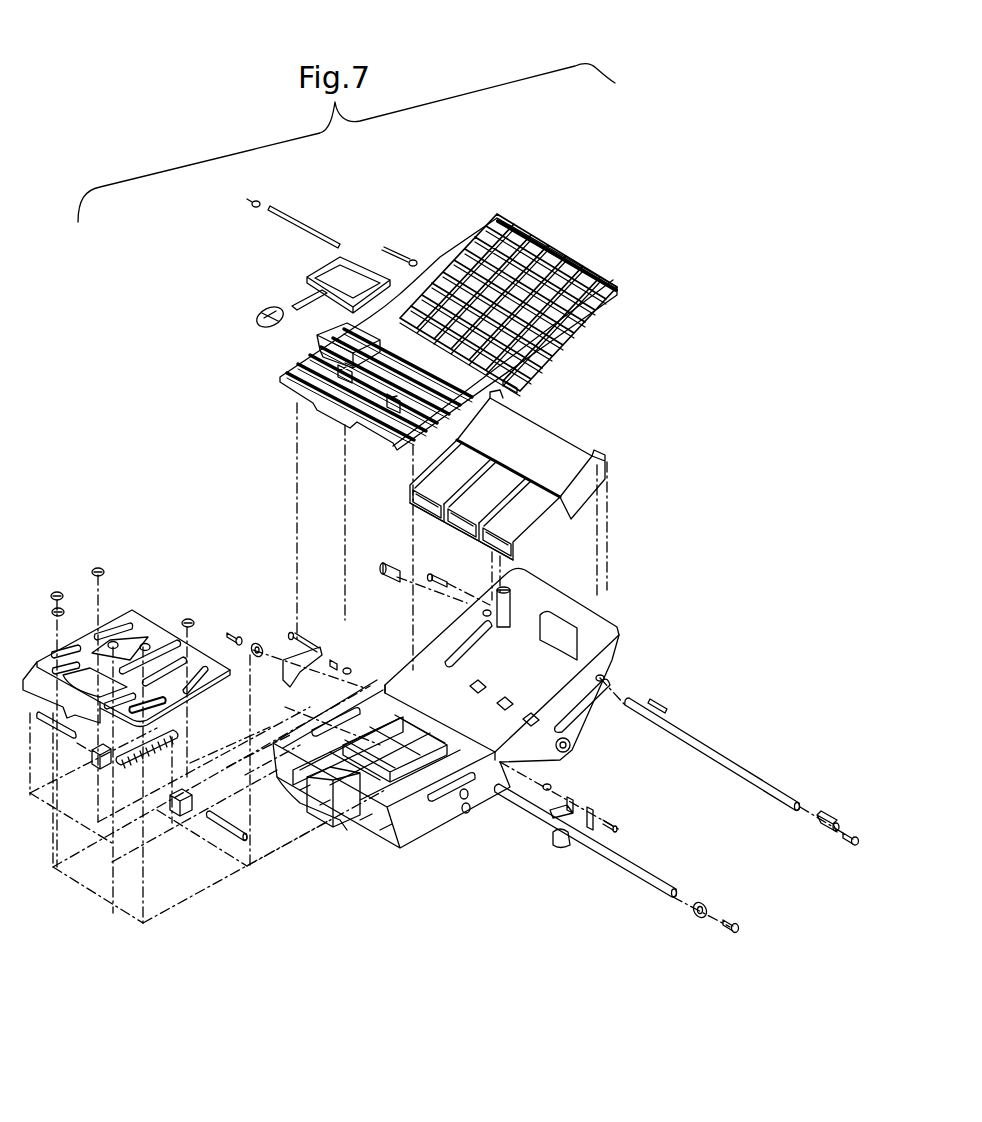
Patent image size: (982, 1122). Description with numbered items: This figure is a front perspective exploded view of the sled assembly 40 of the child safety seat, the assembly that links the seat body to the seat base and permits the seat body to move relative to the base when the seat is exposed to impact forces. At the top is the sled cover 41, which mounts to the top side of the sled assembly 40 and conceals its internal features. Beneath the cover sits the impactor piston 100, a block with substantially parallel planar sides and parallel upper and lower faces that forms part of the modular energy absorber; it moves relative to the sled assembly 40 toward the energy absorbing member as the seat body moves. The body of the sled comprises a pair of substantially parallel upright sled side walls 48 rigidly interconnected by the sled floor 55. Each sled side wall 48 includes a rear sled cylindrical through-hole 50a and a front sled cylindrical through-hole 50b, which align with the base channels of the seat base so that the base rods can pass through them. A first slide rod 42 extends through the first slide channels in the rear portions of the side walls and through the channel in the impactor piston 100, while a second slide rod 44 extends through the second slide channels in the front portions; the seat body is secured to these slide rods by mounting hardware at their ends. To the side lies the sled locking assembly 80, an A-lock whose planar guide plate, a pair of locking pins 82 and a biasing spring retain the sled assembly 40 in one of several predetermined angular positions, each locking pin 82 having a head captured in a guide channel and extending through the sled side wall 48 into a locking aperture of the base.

The sled cover 41 is at (567, 238).
The impactor piston 100 is at (563, 438).
The sled assembly 40 is at (610, 608).
The sled side walls 48 is at (625, 640).
The sled floor 55 is at (470, 657).
The sled locking assembly 80 is at (128, 598).
The locking pins 82 is at (220, 835).
The first slide rod 42 is at (755, 770).
The second slide rod 44 is at (668, 882).
The rear sled cylindrical through-hole 50a is at (580, 752).
The front sled cylindrical through-hole 50b is at (472, 800).